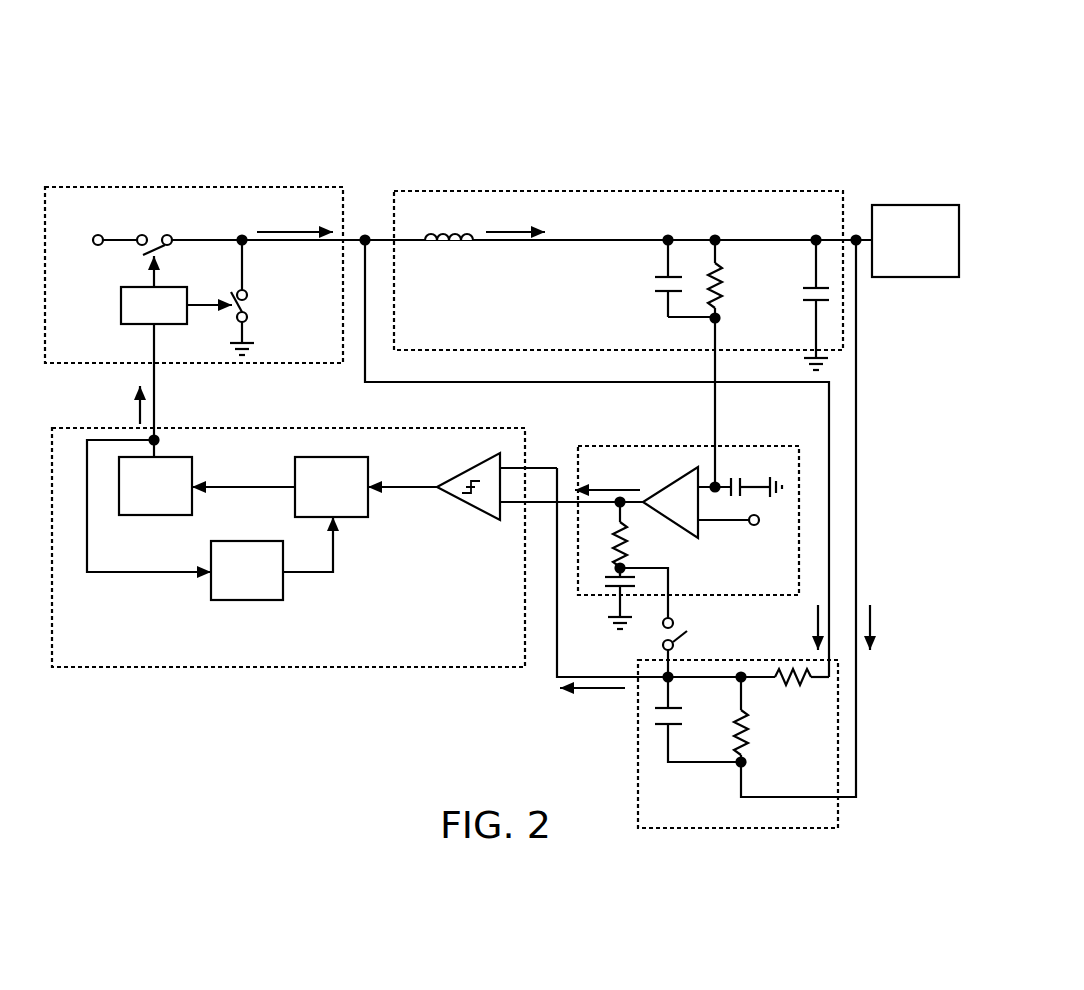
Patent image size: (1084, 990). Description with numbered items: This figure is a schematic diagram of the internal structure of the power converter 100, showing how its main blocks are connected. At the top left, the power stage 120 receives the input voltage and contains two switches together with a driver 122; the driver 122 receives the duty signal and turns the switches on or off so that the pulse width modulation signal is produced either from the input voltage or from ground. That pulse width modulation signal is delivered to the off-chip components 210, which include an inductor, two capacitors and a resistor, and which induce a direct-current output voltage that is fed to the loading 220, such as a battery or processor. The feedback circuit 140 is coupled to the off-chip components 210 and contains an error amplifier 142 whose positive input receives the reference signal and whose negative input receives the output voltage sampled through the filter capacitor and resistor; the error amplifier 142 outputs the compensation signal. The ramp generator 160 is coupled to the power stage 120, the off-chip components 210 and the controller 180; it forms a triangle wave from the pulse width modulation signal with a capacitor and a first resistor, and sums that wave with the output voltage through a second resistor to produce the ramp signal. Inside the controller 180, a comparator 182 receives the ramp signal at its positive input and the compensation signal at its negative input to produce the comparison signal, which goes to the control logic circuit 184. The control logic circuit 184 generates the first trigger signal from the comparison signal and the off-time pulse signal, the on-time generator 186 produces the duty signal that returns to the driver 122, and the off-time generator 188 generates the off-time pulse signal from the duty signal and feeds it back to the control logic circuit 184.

The power converter 100 is at (150, 82).
The power stage 120 is at (267, 187).
The driver 122 is at (176, 356).
The feedback circuit 140 is at (667, 446).
The error amplifier 142 is at (700, 530).
The ramp generator 160 is at (800, 828).
The controller 180 is at (380, 667).
The comparator 182 is at (476, 508).
The control logic circuit 184 is at (331, 487).
The on-time generator 186 is at (155, 486).
The off-time generator 188 is at (247, 570).
The off-chip components 210 is at (730, 191).
The loading 220 is at (915, 241).